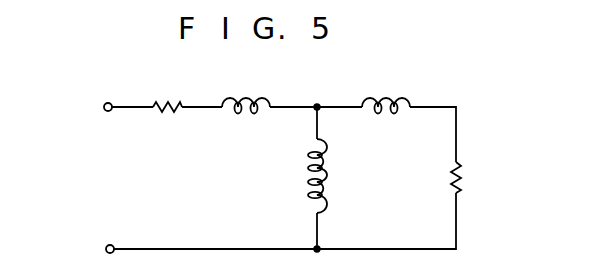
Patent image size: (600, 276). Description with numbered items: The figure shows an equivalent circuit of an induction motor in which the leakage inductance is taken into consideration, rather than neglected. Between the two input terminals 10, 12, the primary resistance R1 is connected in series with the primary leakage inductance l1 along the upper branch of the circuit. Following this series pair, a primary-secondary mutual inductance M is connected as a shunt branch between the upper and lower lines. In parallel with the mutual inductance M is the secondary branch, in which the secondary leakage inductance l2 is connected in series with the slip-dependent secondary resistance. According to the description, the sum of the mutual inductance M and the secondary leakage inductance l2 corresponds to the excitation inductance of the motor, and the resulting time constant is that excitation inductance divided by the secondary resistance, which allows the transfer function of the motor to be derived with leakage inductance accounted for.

The input terminal 10 is at (100, 107).
The input terminal 12 is at (106, 249).
The primary resistance R1 is at (168, 82).
The primary leakage inductance l1 is at (240, 80).
The secondary leakage inductance l2 is at (386, 77).
The primary-secondary mutual inductance M is at (331, 165).